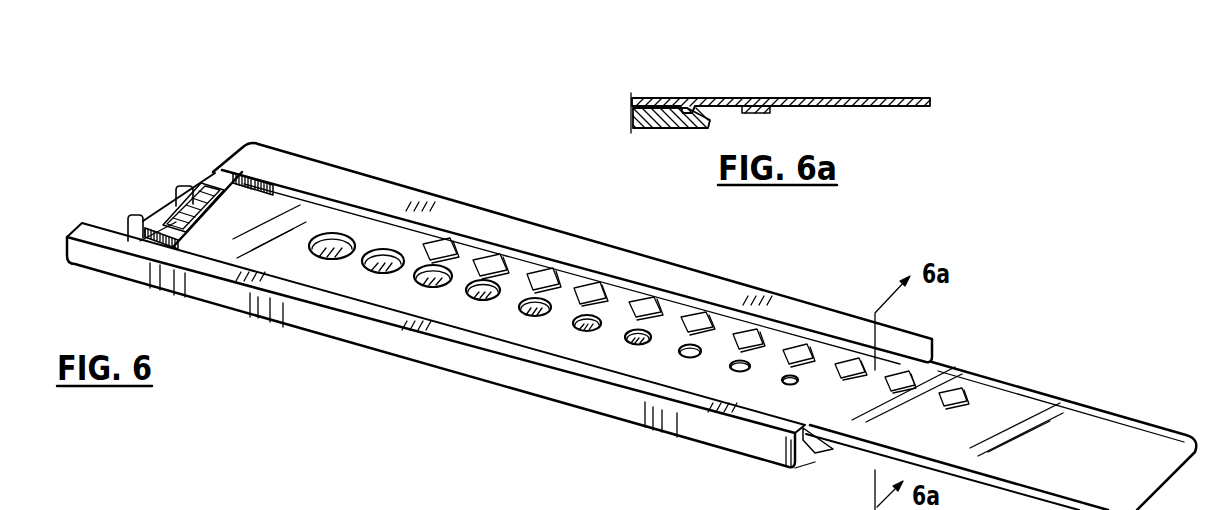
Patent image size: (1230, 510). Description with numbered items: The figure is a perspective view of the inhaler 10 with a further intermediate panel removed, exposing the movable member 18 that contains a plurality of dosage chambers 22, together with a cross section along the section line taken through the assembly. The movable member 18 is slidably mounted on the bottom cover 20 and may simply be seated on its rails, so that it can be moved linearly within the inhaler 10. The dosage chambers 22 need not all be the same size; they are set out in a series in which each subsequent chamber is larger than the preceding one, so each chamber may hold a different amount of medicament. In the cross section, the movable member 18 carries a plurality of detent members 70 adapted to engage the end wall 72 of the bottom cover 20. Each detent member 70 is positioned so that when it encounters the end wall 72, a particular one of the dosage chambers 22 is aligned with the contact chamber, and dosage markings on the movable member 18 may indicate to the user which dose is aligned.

In FIG. 6, the inhaler 10 is at (438, 143).
In FIG. 6, the movable member 18 is at (1078, 428).
In FIG. 6A, the movable member 18 is at (802, 98).
In FIG. 6, the bottom cover 20 is at (275, 160).
In FIG. 6A, the bottom cover 20 is at (656, 127).
In FIG. 6, the dosage chambers 22 is at (343, 258).
In FIG. 6A, the detent members 70 is at (748, 113).
In FIG. 6A, the end wall 72 is at (702, 98).